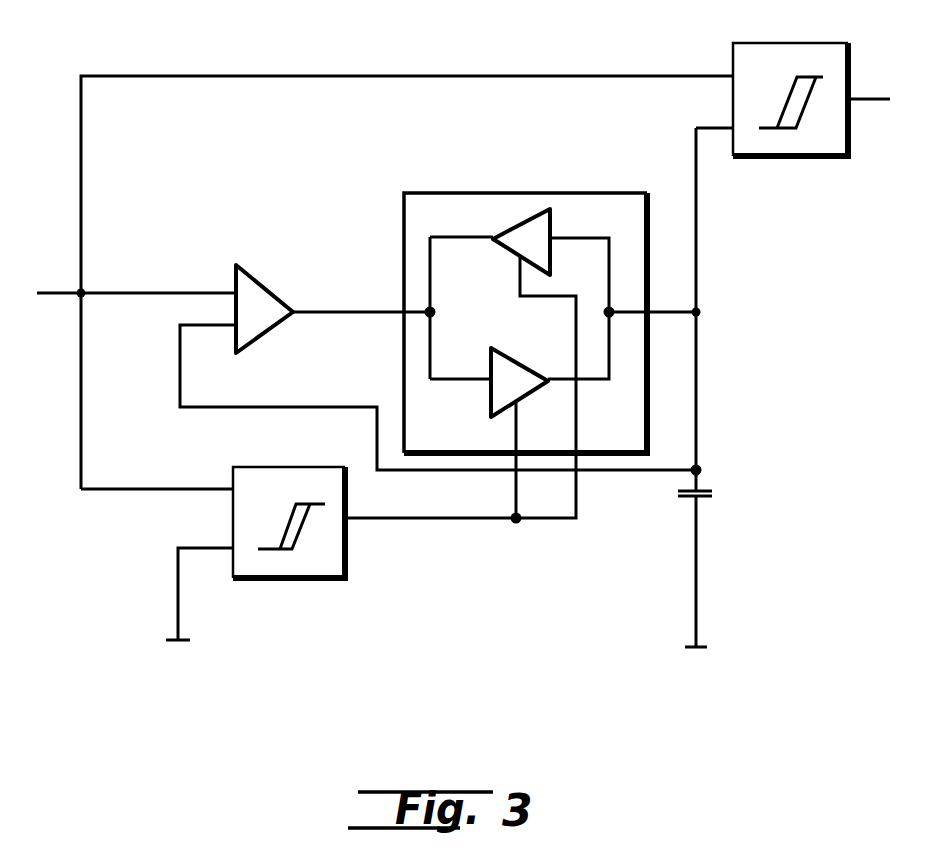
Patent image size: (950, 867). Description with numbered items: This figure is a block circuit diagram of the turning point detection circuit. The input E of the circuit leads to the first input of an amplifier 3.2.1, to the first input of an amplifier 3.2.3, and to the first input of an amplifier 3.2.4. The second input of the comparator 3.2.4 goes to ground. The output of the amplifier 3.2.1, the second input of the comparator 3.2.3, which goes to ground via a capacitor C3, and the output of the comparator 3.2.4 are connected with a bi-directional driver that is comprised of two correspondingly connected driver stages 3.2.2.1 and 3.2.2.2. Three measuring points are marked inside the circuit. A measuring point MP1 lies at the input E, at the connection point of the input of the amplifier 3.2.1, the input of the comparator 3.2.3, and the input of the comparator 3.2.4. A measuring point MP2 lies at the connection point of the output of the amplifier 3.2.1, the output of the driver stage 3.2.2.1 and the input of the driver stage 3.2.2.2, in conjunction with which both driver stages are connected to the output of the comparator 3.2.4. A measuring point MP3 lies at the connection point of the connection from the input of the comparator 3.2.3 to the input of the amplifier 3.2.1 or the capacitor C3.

The input E is at (47, 298).
The measuring point MP1 is at (84, 290).
The amplifier 3.2.1 is at (258, 270).
The measuring point MP2 is at (434, 310).
The driver stage 3.2.2.1 is at (538, 232).
The driver stage 3.2.2.2 is at (500, 364).
The measuring point MP3 is at (735, 345).
The amplifier 3.2.3 is at (810, 56).
The amplifier 3.2.4 is at (233, 540).
The capacitor C3 is at (714, 478).